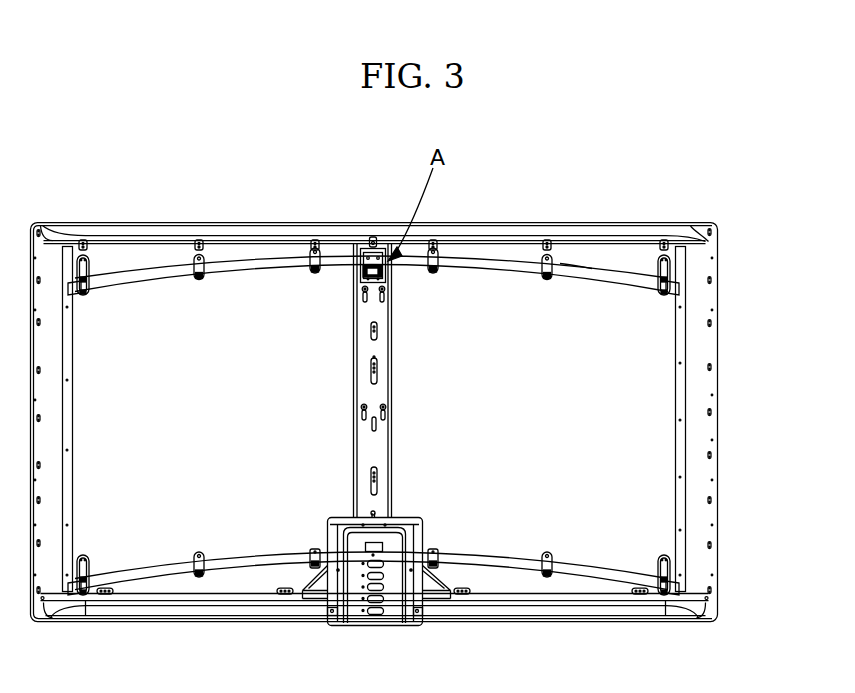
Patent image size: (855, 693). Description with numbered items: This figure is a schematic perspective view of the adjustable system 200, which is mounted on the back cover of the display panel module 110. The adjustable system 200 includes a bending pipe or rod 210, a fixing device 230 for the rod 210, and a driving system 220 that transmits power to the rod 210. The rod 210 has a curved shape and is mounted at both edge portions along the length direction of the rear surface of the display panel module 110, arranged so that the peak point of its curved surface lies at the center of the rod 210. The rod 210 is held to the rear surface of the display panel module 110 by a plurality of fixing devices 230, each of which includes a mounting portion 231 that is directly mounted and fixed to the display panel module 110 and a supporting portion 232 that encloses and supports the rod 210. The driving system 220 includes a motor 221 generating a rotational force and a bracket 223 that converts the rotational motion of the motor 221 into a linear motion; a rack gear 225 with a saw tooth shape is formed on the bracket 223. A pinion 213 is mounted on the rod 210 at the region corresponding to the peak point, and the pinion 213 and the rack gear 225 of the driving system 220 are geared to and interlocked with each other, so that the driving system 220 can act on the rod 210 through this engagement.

The display panel module 110 is at (704, 225).
The adjustable system 200 is at (432, 369).
The bending pipe or rod 210 is at (530, 268).
The pinion 213 is at (371, 250).
The driving system 220 is at (314, 434).
The motor 221 is at (335, 545).
The bracket 223 is at (365, 388).
The rack gear 225 is at (358, 277).
The fixing device 230 is at (373, 204).
The mounting portion 231 is at (552, 264).
The supporting portion 232 is at (578, 267).